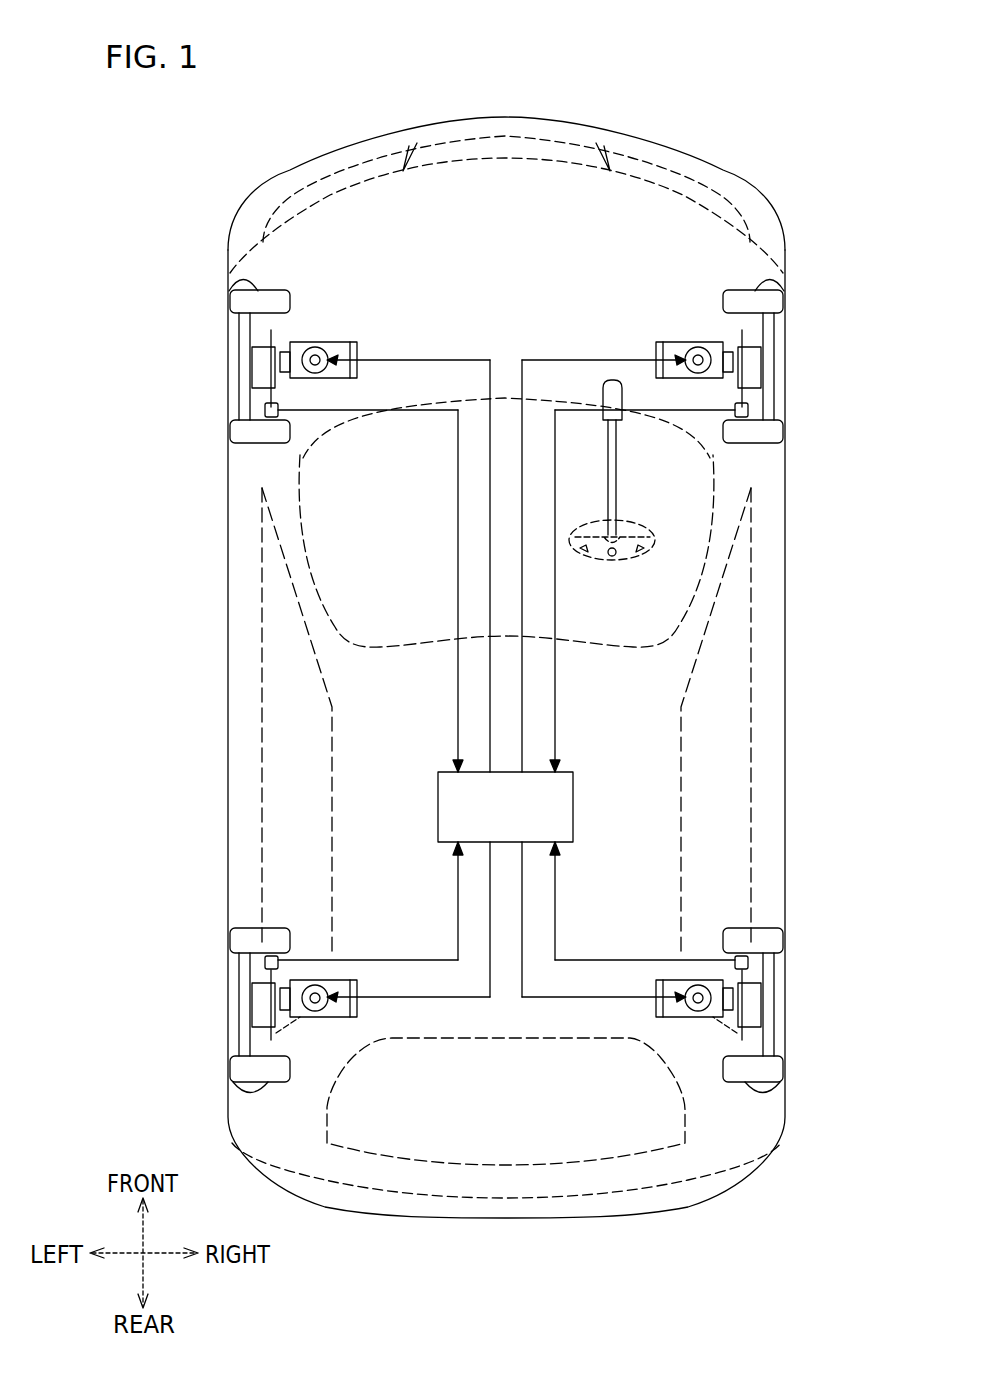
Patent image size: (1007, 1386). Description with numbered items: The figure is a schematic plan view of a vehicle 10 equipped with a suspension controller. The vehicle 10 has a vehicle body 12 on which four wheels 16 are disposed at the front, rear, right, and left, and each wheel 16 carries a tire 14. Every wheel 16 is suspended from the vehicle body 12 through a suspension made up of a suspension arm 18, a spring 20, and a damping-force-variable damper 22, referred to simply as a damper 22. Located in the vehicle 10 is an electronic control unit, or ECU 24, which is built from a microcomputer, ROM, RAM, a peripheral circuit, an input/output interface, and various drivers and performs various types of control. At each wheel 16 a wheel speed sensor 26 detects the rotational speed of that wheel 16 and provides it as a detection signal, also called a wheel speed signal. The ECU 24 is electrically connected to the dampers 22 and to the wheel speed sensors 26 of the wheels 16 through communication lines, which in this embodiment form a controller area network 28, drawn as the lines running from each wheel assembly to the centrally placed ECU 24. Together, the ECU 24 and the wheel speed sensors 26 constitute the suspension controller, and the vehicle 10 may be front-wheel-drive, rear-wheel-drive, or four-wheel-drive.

The vehicle 10 is at (514, 635).
The vehicle body 12 is at (558, 117).
The tire 14 is at (232, 277).
The wheel 16 is at (238, 340).
The suspension arm 18 is at (275, 367).
The spring 20 is at (313, 347).
The damping-force-variable damper 22 is at (328, 352).
The electronic control unit 24 is at (574, 805).
The wheel speed sensor 26 is at (265, 411).
The controller area network 28 is at (490, 917).